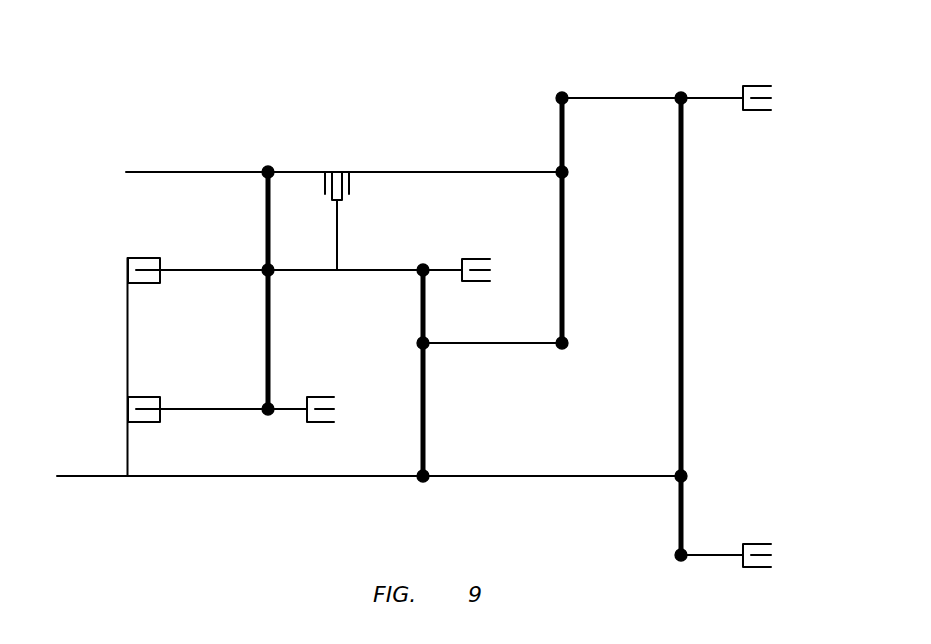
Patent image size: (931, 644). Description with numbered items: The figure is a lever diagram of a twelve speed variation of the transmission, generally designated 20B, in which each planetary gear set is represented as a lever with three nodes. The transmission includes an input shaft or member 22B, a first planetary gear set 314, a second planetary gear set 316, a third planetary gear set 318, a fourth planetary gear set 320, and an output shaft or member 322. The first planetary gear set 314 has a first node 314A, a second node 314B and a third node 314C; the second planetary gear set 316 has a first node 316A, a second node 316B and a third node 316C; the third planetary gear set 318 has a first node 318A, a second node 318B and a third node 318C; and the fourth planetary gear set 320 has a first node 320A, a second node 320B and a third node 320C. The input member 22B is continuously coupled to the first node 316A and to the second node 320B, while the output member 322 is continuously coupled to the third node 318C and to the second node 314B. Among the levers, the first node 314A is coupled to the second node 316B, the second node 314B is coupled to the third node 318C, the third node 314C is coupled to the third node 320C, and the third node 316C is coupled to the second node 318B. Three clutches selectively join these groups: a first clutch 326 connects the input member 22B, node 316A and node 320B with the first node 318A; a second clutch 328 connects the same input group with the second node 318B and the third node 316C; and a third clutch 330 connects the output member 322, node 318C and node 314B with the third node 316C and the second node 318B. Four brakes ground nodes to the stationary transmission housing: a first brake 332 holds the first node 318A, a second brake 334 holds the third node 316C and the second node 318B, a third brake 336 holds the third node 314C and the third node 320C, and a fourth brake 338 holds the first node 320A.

The transmission 20B is at (778, 230).
The input shaft or member 22B is at (83, 478).
The first planetary gear set 314 is at (539, 139).
The first node of first planetary gear set 314A is at (560, 349).
The second node of first planetary gear set 314B is at (568, 172).
The third node of first planetary gear set 314C is at (562, 92).
The second planetary gear set 316 is at (453, 432).
The first node of second planetary gear set 316A is at (421, 482).
The second node of second planetary gear set 316B is at (417, 343).
The third node of second planetary gear set 316C is at (422, 264).
The third planetary gear set 318 is at (296, 144).
The first node of third planetary gear set 318A is at (266, 414).
The second node of third planetary gear set 318B is at (265, 273).
The third node of third planetary gear set 318C is at (268, 166).
The fourth planetary gear set 320 is at (652, 127).
The first node of fourth planetary gear set 320A is at (675, 555).
The second node of fourth planetary gear set 320B is at (687, 476).
The third node of fourth planetary gear set 320C is at (682, 92).
The output shaft or member 322 is at (152, 172).
The first clutch 326 is at (148, 396).
The second clutch 328 is at (140, 257).
The third clutch 330 is at (352, 185).
The first brake 332 is at (322, 425).
The second brake 334 is at (472, 258).
The third brake 336 is at (757, 85).
The fourth brake 338 is at (797, 372).